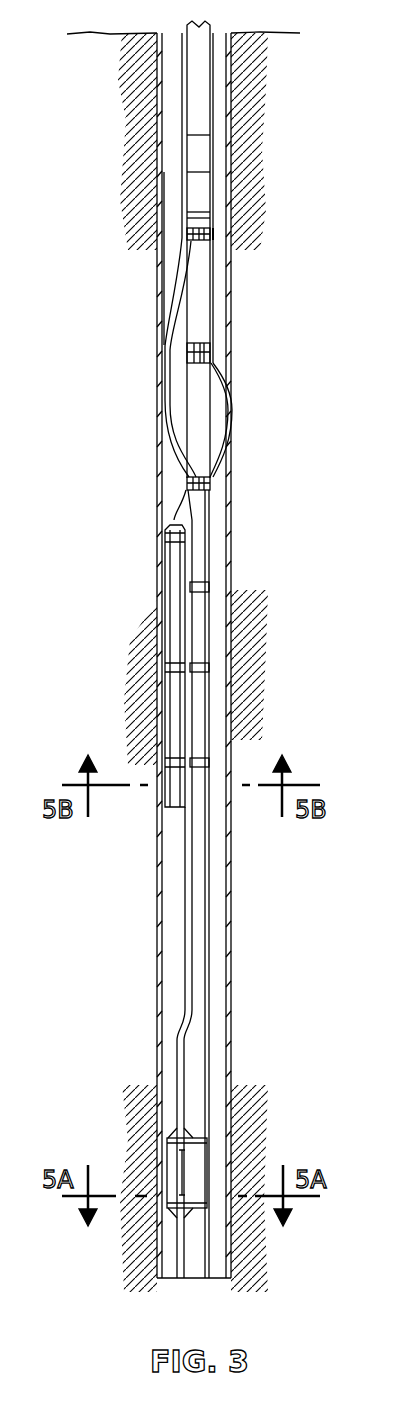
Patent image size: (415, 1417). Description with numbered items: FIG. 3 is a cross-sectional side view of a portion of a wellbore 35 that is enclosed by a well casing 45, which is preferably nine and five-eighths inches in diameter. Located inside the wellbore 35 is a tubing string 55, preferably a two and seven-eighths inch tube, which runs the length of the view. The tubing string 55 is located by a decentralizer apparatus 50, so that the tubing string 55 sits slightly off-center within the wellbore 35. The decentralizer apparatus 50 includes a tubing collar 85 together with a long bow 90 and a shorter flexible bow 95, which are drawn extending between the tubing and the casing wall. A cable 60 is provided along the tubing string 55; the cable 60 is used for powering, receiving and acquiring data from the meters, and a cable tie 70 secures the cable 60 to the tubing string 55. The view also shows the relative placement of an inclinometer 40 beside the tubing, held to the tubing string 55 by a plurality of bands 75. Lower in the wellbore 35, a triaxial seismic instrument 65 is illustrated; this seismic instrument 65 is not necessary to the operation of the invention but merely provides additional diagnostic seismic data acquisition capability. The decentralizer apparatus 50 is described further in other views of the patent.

The wellbore 35 is at (168, 38).
The well casing 45 is at (158, 171).
The cable 60 is at (180, 239).
The cable tie 70 is at (211, 137).
The tubing collar 85 is at (211, 200).
The long bow 90 is at (161, 348).
The decentralizer apparatus 50 is at (252, 320).
The shorter flexible bow 95 is at (231, 416).
The inclinometer 40 is at (173, 636).
The bands 75 is at (210, 592).
The tubing string 55 is at (200, 1104).
The triaxial seismic instrument 65 is at (166, 1172).